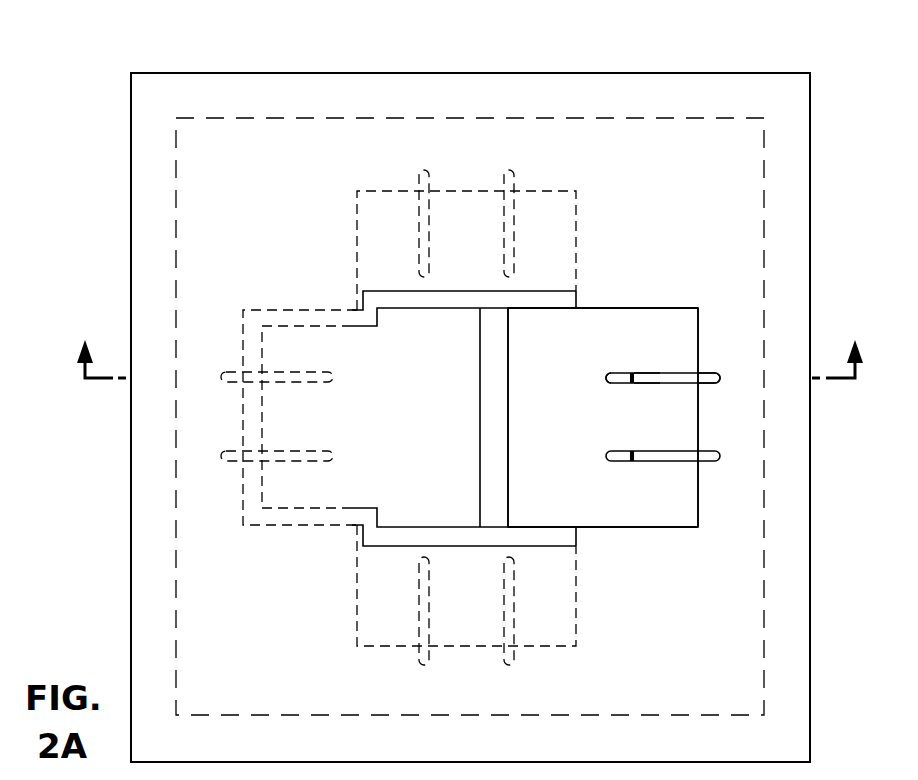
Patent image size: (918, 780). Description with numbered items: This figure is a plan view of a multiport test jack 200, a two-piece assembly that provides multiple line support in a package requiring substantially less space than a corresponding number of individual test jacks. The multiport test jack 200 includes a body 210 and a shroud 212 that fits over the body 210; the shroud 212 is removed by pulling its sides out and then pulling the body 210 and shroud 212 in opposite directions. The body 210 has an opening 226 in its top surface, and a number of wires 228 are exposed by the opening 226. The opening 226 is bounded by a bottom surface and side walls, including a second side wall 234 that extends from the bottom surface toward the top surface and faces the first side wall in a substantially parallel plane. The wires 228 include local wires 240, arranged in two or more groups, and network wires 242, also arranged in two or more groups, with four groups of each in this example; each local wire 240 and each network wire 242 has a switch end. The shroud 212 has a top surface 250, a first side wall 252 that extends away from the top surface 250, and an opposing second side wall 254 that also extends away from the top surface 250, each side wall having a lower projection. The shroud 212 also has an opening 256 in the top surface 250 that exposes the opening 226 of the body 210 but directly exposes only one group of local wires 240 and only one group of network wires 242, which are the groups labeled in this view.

The multiport test jack 200 is at (165, 48).
The body 210 is at (598, 320).
The shroud 212 is at (143, 548).
The opening 226 is at (660, 320).
The wires 228 is at (712, 385).
The second side wall 234 is at (698, 505).
The local wires 240 is at (606, 385).
The network wires 242 is at (645, 385).
The top surface 250 is at (131, 590).
The first side wall 252 is at (131, 625).
The second side wall 254 is at (810, 552).
The opening 256 is at (644, 520).